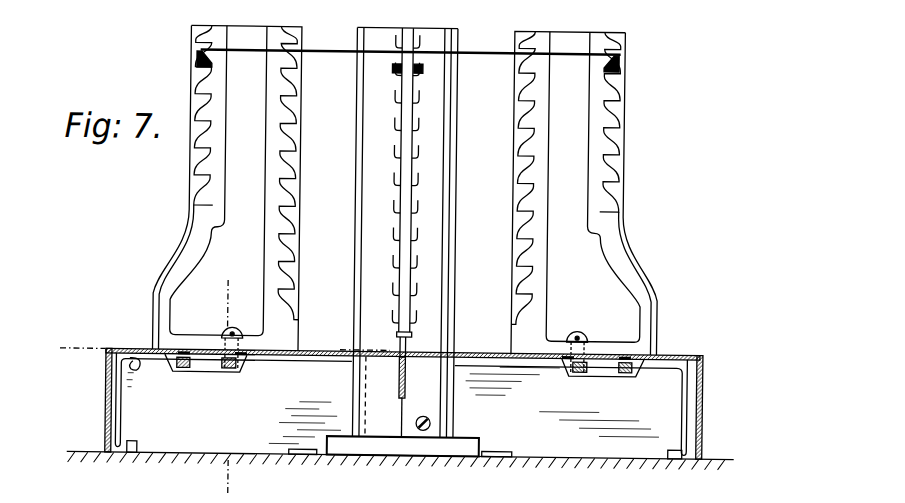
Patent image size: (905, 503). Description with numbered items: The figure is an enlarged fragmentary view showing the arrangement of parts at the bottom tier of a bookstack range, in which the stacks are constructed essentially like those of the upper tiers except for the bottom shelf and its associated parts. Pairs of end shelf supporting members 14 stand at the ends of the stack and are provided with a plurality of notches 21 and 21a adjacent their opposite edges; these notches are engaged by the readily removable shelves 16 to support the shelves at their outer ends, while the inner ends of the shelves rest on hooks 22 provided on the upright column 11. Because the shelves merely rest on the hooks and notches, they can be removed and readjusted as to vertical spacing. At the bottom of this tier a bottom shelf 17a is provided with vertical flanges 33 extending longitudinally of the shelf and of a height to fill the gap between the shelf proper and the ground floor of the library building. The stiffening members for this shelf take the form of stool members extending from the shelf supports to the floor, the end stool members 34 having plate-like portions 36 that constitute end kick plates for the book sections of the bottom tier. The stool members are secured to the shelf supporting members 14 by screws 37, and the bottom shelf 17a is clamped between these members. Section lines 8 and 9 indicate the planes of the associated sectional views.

The section line 8- 8 is at (78, 360).
The section line 9- 9 is at (212, 295).
The upright column 11 is at (451, 221).
The end shelf supporting member 14 is at (592, 236).
The removable shelf 16 is at (326, 52).
The bottom shelf 17a is at (478, 352).
The notch 21 is at (206, 163).
The notch 21a is at (282, 130).
The hook 22 is at (388, 203).
The vertical flange 33 is at (108, 416).
The end stool member 34 is at (130, 360).
The plate-like portion 36 is at (393, 406).
The screw 37 is at (583, 333).